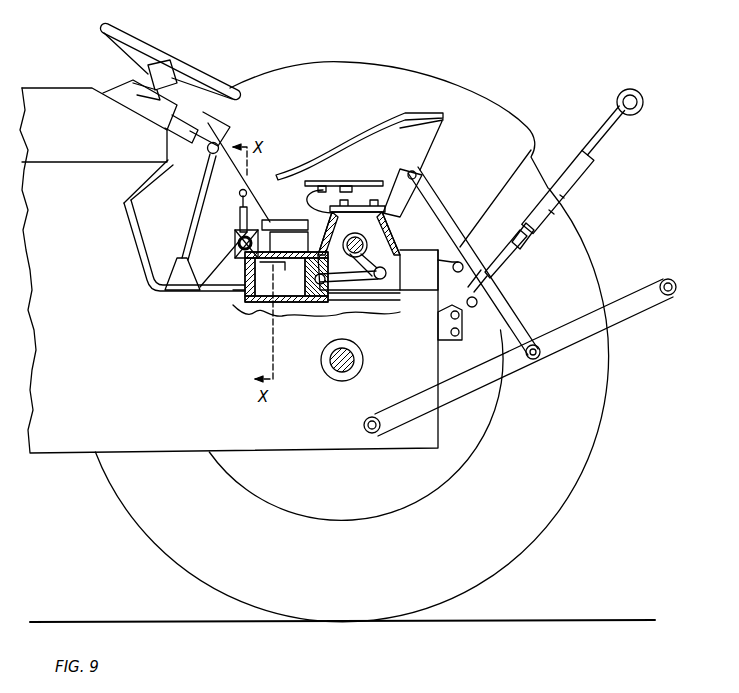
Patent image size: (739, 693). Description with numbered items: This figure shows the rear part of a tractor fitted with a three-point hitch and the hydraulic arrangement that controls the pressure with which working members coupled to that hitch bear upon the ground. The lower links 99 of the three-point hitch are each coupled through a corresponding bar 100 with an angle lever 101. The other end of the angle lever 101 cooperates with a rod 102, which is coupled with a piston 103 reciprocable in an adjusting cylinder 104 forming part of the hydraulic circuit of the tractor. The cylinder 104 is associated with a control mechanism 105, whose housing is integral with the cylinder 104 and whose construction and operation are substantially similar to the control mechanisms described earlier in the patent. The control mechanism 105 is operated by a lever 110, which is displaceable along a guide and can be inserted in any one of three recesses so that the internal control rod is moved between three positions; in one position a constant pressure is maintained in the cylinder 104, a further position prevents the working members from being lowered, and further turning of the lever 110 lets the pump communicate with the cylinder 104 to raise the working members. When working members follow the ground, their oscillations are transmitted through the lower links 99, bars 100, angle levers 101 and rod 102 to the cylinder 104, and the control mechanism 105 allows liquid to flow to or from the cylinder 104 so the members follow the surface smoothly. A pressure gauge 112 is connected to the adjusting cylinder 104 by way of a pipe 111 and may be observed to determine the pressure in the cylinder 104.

The lower link 99 is at (558, 353).
The bar 100 is at (510, 312).
The angle lever 101 is at (392, 200).
The rod 102 is at (395, 305).
The piston 103 is at (300, 304).
The adjusting cylinder 104 is at (260, 304).
The control mechanism 105 is at (242, 237).
The lever 110 is at (239, 193).
The pipe 111 is at (143, 258).
The pressure gauge 112 is at (208, 119).